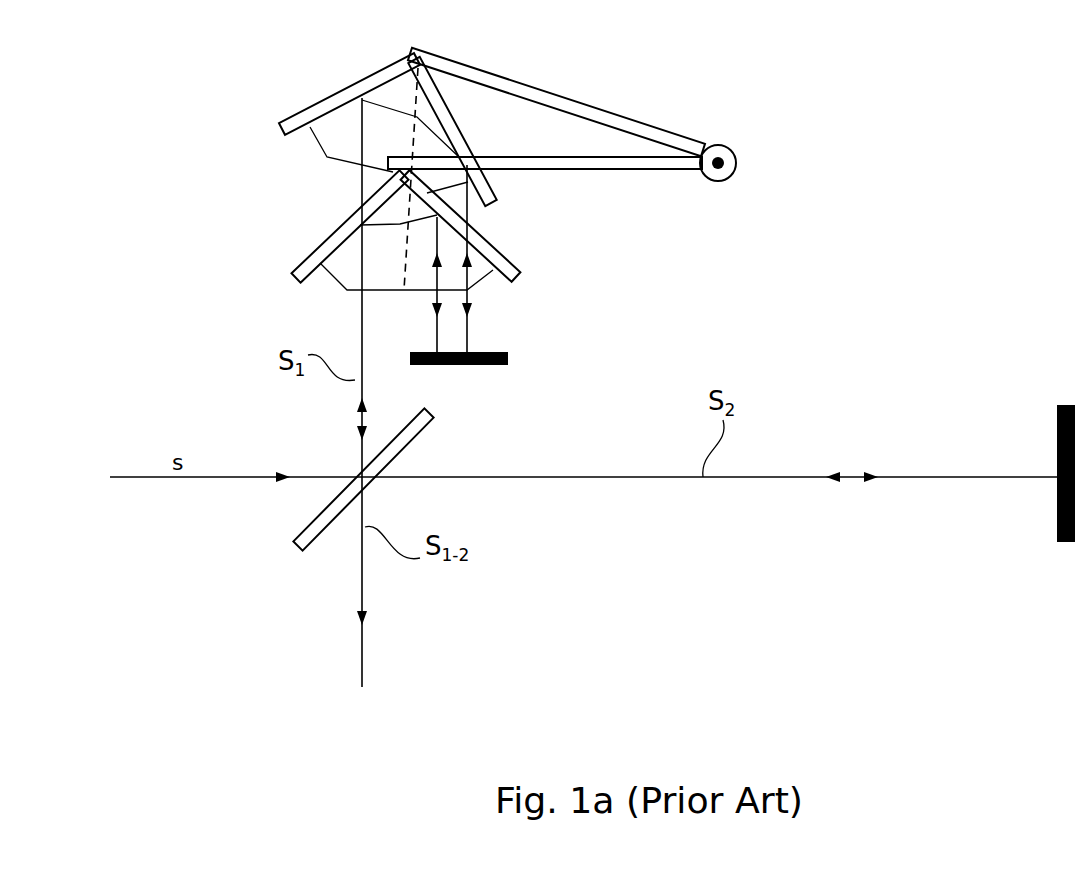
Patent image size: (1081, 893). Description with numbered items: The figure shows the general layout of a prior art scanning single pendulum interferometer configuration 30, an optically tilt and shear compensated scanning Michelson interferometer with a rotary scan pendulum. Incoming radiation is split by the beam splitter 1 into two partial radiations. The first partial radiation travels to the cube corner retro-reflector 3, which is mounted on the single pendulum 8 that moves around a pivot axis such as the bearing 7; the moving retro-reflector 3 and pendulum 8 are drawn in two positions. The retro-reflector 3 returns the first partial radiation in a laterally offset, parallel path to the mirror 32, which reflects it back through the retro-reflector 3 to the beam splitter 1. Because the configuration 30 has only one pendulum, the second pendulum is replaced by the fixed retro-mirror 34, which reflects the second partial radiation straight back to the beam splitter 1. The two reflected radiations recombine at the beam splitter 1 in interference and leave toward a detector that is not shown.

The beam splitter 1 is at (292, 535).
The cube corner retro-reflector 3 is at (323, 102).
The bearing 7 is at (733, 147).
The single pendulum 8 is at (592, 108).
The scanning single pendulum interferometer configuration 30 is at (975, 141).
The mirror 32 is at (508, 358).
The fixed retro-mirror 34 is at (1055, 425).